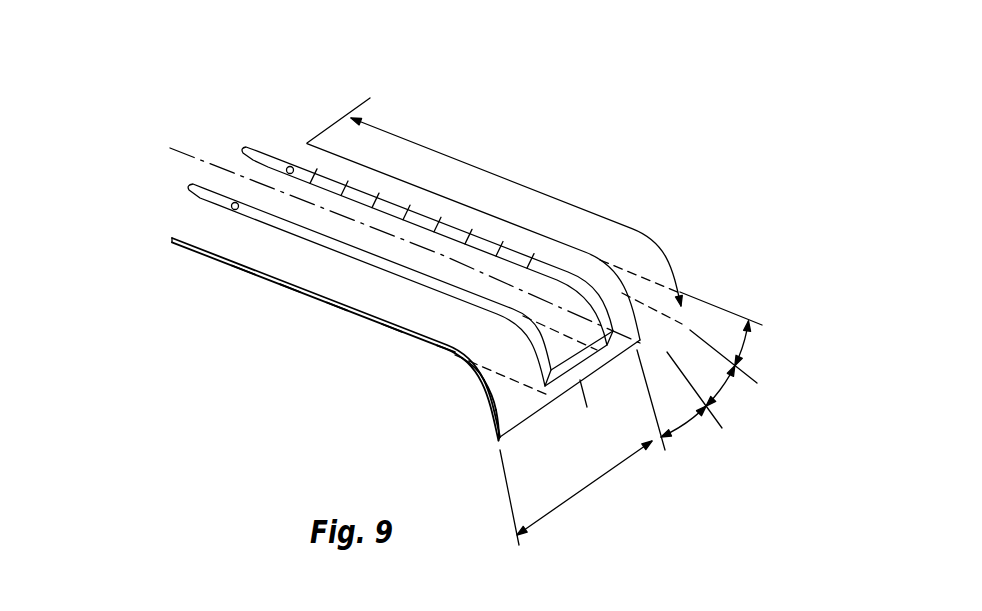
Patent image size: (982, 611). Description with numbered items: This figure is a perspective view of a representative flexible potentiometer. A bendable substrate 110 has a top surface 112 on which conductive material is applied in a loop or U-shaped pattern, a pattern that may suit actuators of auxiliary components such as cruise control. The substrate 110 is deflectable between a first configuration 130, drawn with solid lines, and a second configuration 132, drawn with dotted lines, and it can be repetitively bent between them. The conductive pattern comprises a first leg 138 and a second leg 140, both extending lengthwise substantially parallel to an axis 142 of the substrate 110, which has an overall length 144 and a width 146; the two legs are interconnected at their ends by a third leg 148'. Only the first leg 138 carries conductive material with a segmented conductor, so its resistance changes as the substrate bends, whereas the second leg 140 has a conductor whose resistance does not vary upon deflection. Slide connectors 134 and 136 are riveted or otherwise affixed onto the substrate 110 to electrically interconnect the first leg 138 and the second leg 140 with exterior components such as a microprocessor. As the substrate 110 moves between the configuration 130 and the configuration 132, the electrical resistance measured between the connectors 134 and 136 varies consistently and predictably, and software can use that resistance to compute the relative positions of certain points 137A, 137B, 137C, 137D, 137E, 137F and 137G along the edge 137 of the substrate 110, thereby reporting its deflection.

The substrate 110 is at (225, 243).
The top surface 112 is at (170, 242).
The first configuration 130 is at (268, 425).
The second configuration 132 is at (683, 294).
The connector 134 is at (273, 153).
The connector 136 is at (197, 195).
The edge 137 is at (250, 276).
The point 137A is at (290, 289).
The point 137B is at (337, 305).
The point 137C is at (392, 323).
The point 137D is at (450, 346).
The point 137E is at (468, 368).
The point 137F is at (487, 398).
The point 137G is at (498, 420).
The first leg 138 is at (425, 213).
The second leg 140 is at (302, 289).
The axis 142 is at (190, 157).
The overall length 144 is at (583, 207).
The width 146 is at (587, 487).
The bent end 148' is at (567, 408).